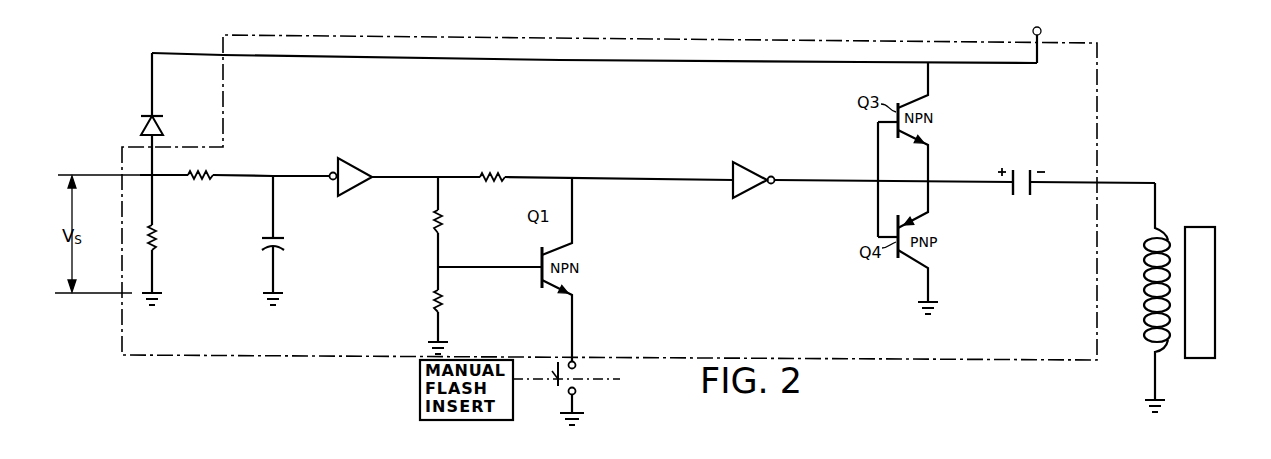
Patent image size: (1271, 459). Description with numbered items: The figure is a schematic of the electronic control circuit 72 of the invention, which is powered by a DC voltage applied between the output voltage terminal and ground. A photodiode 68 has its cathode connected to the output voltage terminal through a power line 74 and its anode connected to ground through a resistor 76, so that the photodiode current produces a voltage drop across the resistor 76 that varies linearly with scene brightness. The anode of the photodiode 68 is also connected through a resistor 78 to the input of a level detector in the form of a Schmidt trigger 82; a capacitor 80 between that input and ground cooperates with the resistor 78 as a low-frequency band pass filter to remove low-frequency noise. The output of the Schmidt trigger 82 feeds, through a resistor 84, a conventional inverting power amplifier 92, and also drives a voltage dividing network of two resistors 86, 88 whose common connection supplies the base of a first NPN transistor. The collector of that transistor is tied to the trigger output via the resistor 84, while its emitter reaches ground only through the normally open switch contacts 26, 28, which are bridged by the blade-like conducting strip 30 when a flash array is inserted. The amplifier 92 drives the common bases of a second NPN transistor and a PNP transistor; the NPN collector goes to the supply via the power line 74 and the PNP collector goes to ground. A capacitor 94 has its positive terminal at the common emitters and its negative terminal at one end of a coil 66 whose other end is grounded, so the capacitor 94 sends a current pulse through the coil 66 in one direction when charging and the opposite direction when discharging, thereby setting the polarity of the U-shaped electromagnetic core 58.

The switch contact 26 is at (576, 366).
The switch contact 28 is at (576, 393).
The blade-like conducting strip 30 is at (566, 372).
The U-shaped electromagnetic core 58 is at (1215, 295).
The coil 66 is at (1165, 230).
The photodiode 68 is at (143, 122).
The electronic control circuit 72 is at (1102, 146).
The power line 74 is at (660, 60).
The resistor 76 is at (156, 232).
The resistor 78 is at (205, 172).
The capacitor 80 is at (279, 238).
The Schmidt trigger 82 is at (358, 166).
The resistor 84 is at (508, 162).
The resistor 86 is at (443, 221).
The resistor 88 is at (444, 296).
The inverting power amplifier 92 is at (746, 170).
The capacitor 94 is at (1027, 178).